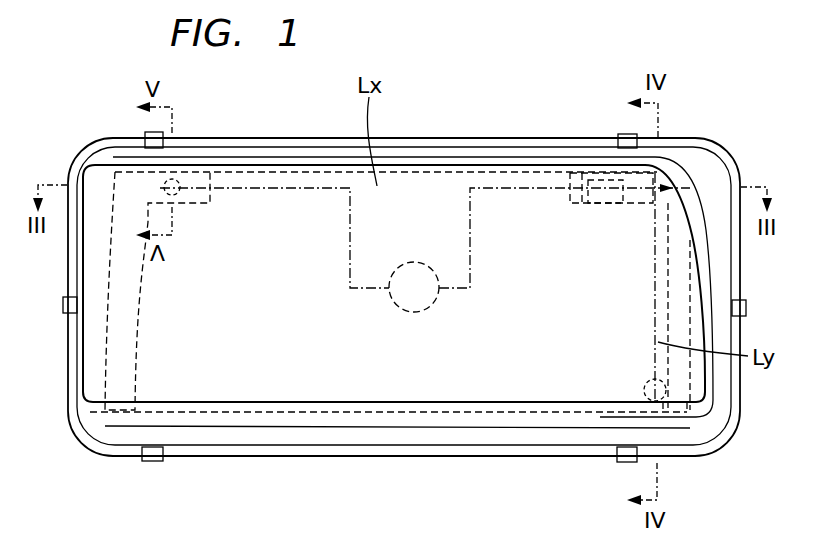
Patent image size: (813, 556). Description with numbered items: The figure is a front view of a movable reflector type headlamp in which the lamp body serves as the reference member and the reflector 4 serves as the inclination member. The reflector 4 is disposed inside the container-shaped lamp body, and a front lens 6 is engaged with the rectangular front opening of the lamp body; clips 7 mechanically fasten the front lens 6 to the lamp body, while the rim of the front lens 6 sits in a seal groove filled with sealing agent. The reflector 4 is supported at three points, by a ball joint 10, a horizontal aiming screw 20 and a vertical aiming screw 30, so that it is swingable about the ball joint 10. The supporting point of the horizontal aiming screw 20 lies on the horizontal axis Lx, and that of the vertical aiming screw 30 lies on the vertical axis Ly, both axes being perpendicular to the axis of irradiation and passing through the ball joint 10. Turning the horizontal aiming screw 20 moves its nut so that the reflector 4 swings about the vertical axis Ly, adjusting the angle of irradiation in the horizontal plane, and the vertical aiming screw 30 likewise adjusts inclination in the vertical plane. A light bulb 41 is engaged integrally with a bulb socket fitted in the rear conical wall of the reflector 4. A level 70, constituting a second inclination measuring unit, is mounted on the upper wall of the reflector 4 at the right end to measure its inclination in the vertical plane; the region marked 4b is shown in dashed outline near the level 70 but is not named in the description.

The reflector 4 is at (528, 170).
The lens step portion 4b is at (577, 168).
The front lens 6 is at (398, 378).
The clips 7 is at (145, 133).
The ball joint 10 is at (680, 193).
The horizontal aiming screw 20 is at (186, 185).
The vertical aiming screw 30 is at (689, 396).
The light bulb 41 is at (428, 262).
The level 70 is at (602, 178).